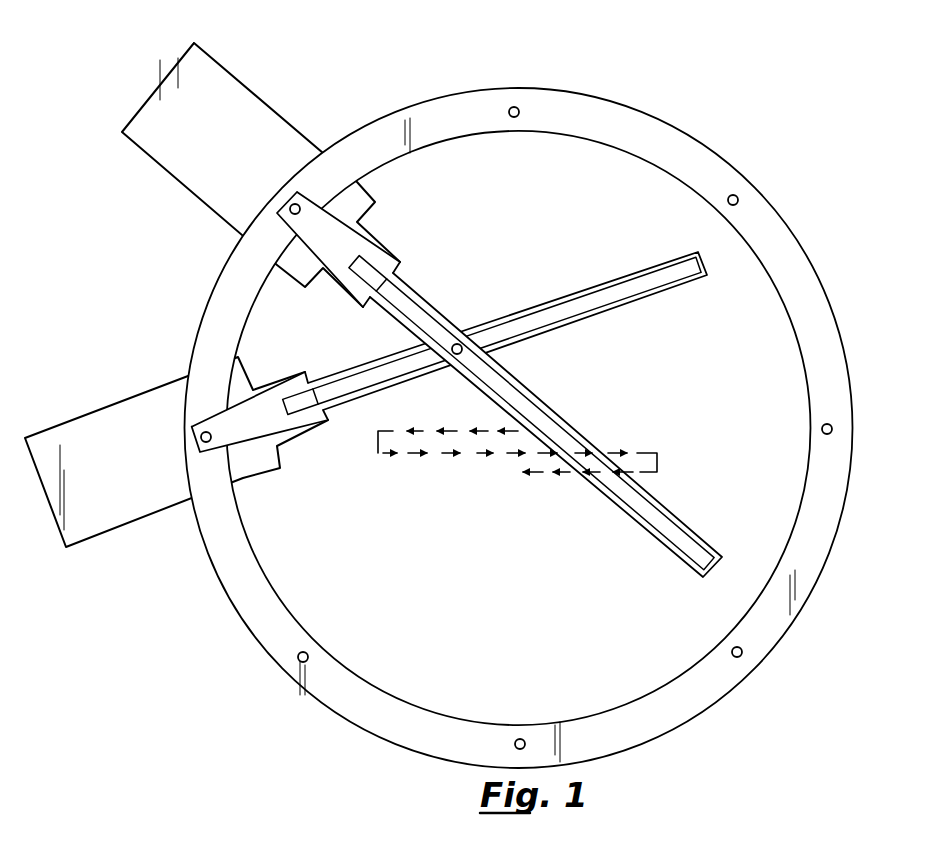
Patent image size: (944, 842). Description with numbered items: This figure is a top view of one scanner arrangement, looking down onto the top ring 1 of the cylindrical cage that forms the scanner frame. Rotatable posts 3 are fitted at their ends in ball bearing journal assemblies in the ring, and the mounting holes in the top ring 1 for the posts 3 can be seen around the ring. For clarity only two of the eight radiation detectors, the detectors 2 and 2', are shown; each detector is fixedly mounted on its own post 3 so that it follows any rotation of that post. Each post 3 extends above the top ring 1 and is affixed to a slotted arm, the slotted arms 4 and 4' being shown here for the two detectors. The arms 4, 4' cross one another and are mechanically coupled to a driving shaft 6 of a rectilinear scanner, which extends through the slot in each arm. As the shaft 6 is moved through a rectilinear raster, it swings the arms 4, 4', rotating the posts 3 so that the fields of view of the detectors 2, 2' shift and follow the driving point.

The top ring 1 is at (820, 337).
The radiation detector assembly 2 is at (261, 175).
The radiation detector 2' is at (176, 457).
The post 3 is at (519, 106).
The slotted arm 4 is at (499, 384).
The slotted arm 4' is at (449, 352).
The driving shaft 6 is at (455, 358).